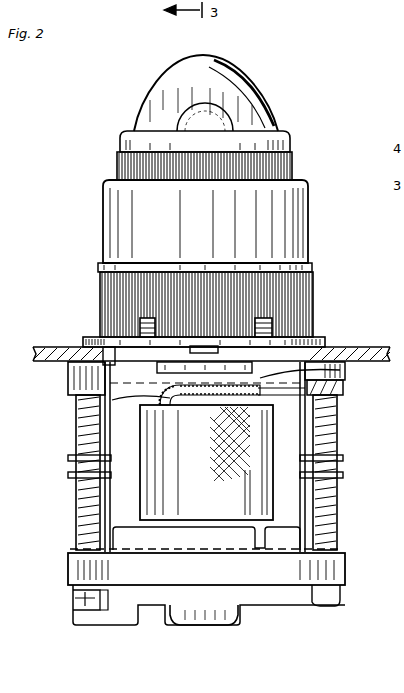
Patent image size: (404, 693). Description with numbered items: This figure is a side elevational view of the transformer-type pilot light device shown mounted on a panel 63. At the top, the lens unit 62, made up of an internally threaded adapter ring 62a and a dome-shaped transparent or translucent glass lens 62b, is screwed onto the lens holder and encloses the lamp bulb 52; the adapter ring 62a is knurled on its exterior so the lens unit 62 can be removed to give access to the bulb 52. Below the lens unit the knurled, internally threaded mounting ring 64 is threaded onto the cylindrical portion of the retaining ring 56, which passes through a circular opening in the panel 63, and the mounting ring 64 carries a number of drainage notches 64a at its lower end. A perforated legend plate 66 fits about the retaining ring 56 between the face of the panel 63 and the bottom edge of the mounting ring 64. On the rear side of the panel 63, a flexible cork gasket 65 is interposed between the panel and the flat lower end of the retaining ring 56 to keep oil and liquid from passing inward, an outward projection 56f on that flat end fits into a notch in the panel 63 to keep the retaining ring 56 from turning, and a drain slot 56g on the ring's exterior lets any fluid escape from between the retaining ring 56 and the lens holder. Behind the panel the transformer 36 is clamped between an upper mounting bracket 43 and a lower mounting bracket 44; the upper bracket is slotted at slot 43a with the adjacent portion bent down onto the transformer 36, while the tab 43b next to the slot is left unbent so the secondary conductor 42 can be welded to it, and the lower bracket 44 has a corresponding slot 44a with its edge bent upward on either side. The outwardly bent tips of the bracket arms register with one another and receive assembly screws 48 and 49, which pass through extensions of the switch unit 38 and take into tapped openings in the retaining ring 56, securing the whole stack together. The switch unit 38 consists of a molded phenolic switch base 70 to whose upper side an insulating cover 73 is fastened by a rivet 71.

The transformer 36 is at (204, 437).
The switch unit 38 is at (248, 610).
The secondary conductor 42 is at (78, 410).
The upper mounting bracket 43 is at (340, 420).
The slot 43a is at (342, 373).
The tab 43b is at (344, 386).
The lower mounting bracket 44 is at (338, 503).
The slot 44a is at (265, 532).
The assembly screw 48 is at (342, 606).
The assembly screw 49 is at (75, 598).
The lamp bulb 52 is at (193, 118).
The retaining ring 56 is at (66, 373).
The outward projection 56f is at (107, 352).
The drain slot 56g is at (205, 345).
The lens unit 62 is at (236, 58).
The adapter ring 62a is at (288, 140).
The glass lens 62b is at (248, 93).
The panel 63 is at (57, 349).
The mounting ring 64 is at (300, 203).
The drainage notches 64a is at (140, 322).
The gasket 65 is at (238, 372).
The legend plate 66 is at (306, 340).
The switch base 70 is at (293, 598).
The rivet 71 is at (75, 582).
The insulating cover 73 is at (68, 556).